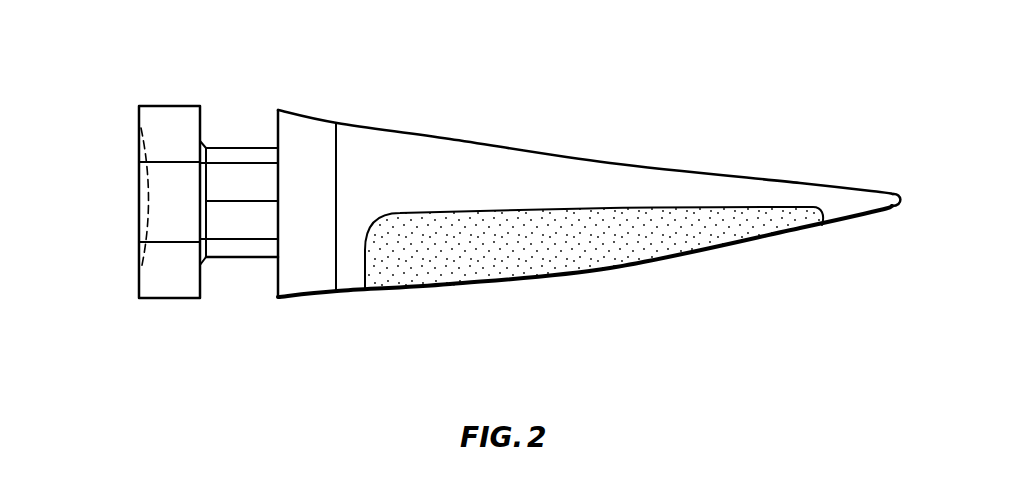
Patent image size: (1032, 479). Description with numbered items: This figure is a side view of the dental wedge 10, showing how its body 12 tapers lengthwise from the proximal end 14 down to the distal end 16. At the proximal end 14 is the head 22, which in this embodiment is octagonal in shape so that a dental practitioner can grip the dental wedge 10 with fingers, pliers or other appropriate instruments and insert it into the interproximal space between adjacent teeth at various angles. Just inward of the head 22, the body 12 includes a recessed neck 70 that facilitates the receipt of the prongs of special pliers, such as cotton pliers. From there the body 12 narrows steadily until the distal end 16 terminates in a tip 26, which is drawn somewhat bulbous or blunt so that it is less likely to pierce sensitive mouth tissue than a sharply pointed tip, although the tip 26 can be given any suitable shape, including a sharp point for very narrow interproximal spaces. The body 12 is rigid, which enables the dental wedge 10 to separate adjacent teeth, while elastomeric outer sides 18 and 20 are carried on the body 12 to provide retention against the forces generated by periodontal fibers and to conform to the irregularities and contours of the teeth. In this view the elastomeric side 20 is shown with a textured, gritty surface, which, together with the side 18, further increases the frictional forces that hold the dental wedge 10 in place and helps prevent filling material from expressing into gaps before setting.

The dental wedge 10 is at (611, 175).
The body 12 is at (355, 143).
The proximal end 14 is at (138, 100).
The distal end 16 is at (885, 172).
The elastomeric outer side 18 is at (693, 173).
The elastomeric outer side 20 is at (635, 237).
The head 22 is at (169, 283).
The tip 26 is at (853, 204).
The recessed neck 70 is at (240, 147).